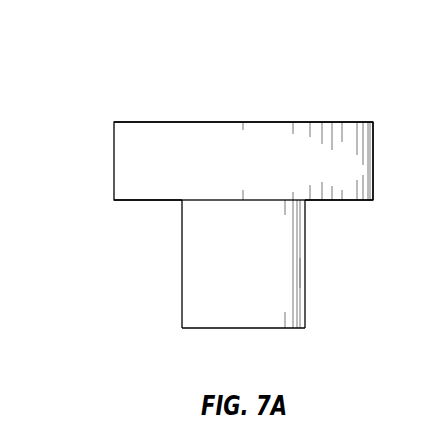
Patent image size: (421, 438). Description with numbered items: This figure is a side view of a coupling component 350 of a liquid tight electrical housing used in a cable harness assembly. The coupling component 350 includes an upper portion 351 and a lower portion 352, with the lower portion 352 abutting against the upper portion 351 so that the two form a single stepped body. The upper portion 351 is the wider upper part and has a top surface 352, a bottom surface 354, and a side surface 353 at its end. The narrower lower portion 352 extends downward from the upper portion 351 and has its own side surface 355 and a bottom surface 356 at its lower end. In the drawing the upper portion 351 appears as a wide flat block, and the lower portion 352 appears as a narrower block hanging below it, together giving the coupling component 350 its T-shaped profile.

The coupling component 350 is at (140, 42).
The upper portion 351 is at (104, 157).
The lower portion 352 is at (167, 122).
The side surface 353 is at (393, 110).
The bottom surface 354 is at (134, 200).
The side surface 355 is at (305, 267).
The bottom surface 356 is at (272, 328).